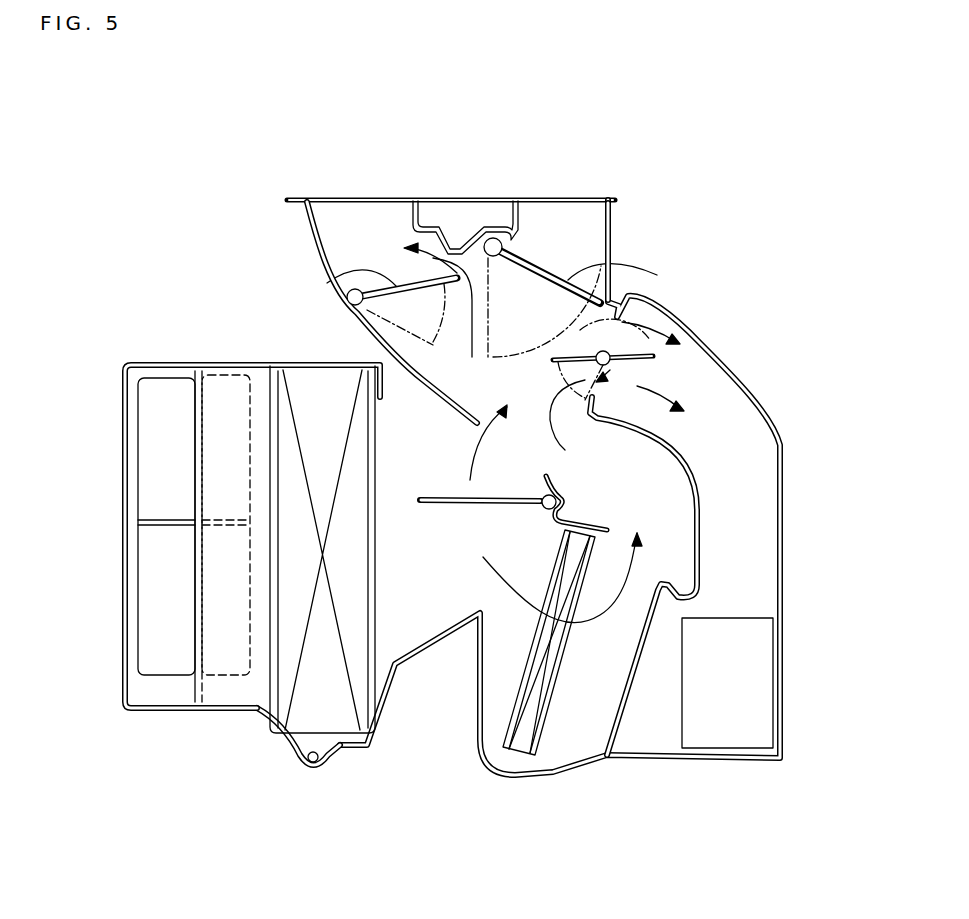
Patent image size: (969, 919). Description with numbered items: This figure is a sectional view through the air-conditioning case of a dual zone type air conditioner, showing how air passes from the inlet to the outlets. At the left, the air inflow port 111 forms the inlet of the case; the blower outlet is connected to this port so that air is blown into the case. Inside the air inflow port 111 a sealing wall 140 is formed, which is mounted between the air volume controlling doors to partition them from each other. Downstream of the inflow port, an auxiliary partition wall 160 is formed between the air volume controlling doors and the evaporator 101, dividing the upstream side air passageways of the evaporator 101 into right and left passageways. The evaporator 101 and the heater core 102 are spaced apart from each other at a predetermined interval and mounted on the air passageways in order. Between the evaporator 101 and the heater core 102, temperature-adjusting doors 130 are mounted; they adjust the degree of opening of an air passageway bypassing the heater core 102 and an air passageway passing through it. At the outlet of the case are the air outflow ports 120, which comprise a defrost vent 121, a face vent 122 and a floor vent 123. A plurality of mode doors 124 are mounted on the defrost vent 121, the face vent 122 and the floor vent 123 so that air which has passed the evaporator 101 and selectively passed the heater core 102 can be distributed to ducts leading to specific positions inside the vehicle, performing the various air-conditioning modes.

The air outflow ports 120 is at (410, 123).
The defrost vent 121 is at (365, 222).
The face vent 122 is at (560, 225).
The floor vent 123 is at (753, 685).
The mode doors 124 is at (338, 284).
The temperature-adjusting doors 130 is at (445, 503).
The evaporator 101 is at (308, 732).
The heater core 102 is at (525, 738).
The air inflow port 111 is at (165, 677).
The sealing wall 140 is at (165, 523).
The auxiliary partition wall 160 is at (195, 458).